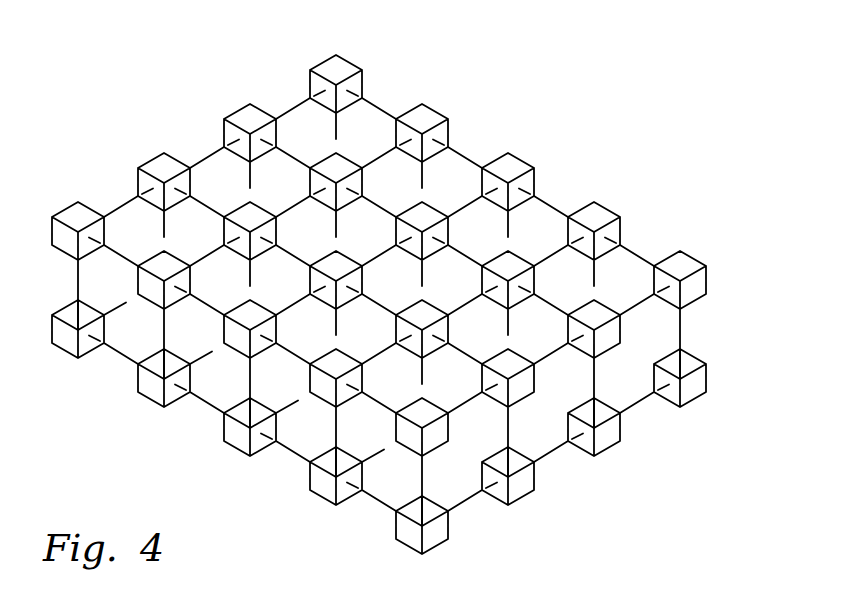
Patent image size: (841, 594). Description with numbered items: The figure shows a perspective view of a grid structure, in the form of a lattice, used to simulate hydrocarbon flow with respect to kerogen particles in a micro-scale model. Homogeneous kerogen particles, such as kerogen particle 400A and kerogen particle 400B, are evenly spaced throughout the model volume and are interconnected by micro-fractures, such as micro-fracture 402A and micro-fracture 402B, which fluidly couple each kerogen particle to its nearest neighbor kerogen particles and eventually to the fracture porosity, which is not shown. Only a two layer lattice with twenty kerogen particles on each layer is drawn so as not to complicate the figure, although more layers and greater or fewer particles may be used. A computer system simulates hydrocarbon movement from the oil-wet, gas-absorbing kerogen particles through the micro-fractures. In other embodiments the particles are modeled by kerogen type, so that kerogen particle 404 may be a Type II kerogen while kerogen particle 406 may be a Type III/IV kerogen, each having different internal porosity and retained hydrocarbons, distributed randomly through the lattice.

The kerogen particle 400A is at (346, 58).
The micro-fracture 402A is at (373, 104).
The kerogen particle 400B is at (434, 110).
The micro-fracture 402B is at (460, 153).
The kerogen particle 404 is at (432, 540).
The kerogen particle 406 is at (520, 492).